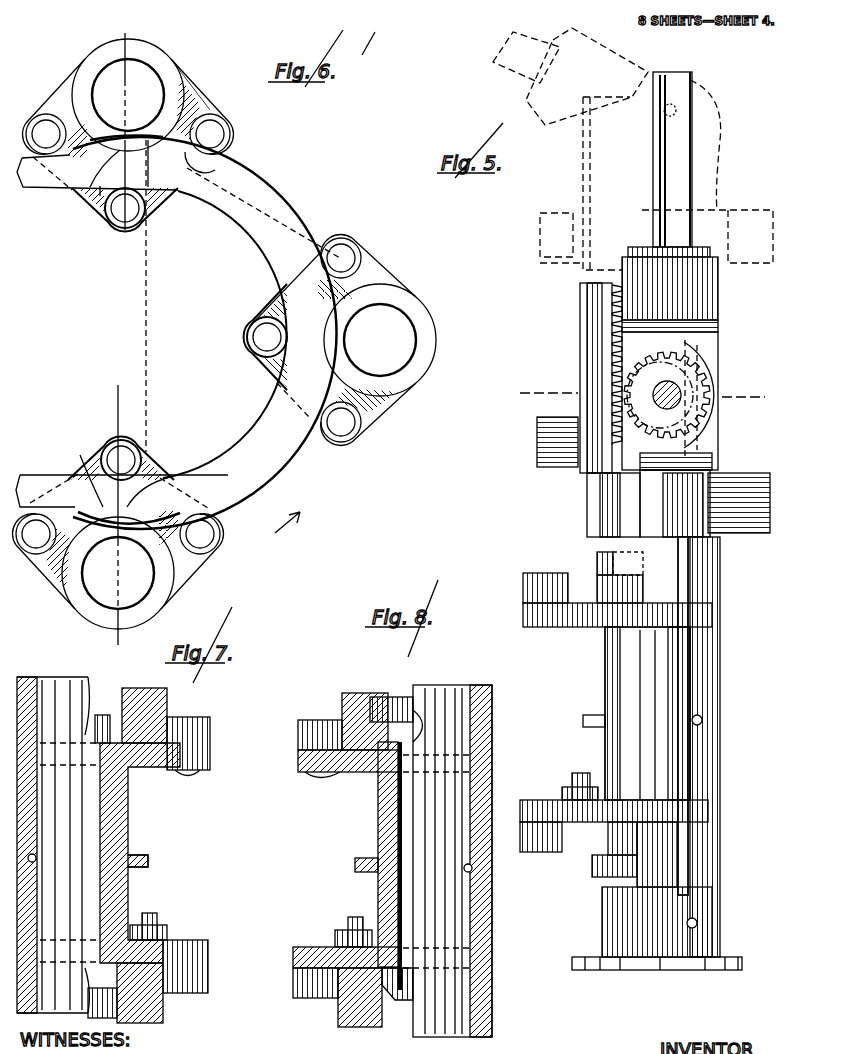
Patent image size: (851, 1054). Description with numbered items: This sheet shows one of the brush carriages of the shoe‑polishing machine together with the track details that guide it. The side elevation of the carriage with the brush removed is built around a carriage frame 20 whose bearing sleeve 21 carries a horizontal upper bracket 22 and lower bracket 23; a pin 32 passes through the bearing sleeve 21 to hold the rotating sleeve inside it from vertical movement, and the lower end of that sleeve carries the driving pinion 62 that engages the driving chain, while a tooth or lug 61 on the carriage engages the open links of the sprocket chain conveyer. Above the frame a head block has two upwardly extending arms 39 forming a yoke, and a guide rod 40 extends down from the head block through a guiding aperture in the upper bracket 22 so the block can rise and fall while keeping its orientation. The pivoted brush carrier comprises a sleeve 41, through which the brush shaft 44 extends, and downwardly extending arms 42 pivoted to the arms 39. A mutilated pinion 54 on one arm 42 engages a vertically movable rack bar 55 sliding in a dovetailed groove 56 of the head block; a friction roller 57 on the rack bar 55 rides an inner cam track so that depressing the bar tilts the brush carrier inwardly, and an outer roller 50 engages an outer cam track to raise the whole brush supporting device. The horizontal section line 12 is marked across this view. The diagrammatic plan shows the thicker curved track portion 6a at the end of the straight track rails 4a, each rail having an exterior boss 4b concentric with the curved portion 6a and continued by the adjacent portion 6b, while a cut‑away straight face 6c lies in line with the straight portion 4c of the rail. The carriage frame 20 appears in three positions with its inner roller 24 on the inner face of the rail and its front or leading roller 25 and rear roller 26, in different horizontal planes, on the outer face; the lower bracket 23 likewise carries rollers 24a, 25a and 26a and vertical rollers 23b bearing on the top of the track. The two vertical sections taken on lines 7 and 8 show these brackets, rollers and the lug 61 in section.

In FIG. 6, the track rail 4a is at (49, 190).
In FIG. 6, the exterior boss 4b is at (86, 200).
In FIG. 6, the straight portion of the rail 4c is at (98, 196).
In FIG. 6, the curved track portion 6a is at (291, 212).
In FIG. 6, the adjacent portion of the curved track 6b is at (188, 112).
In FIG. 6, the cut-away straight face 6c is at (208, 173).
In FIG. 6, the section line 7- 7 is at (118, 152).
In FIG. 6, the section line 8- 8 is at (115, 517).
In FIG. 5, the section line 12- 12 is at (637, 399).
In FIG. 7, the carriage frame 20 is at (140, 853).
In FIG. 8, the carriage frame 20 is at (378, 816).
In FIG. 6, the bearing sleeve 21 is at (82, 598).
In FIG. 5, the bearing sleeve 21 is at (705, 771).
In FIG. 7, the bearing sleeve 21 is at (58, 845).
In FIG. 8, the bearing sleeve 21 is at (492, 931).
In FIG. 5, the upper bracket 22 is at (575, 627).
In FIG. 8, the upper bracket 22 is at (300, 765).
In FIG. 8, the lower bracket 23 is at (322, 943).
In FIG. 5, the vertical rollers 23b is at (575, 781).
In FIG. 7, the vertical rollers 23b is at (152, 912).
In FIG. 8, the vertical rollers 23b is at (350, 918).
In FIG. 6, the inner roller 24 is at (140, 213).
In FIG. 5, the inner roller 24 is at (523, 589).
In FIG. 7, the inner roller 24 is at (203, 721).
In FIG. 8, the inner roller 24 is at (315, 720).
In FIG. 5, the inner roller of lower bracket 24a is at (541, 852).
In FIG. 7, the inner roller of lower bracket 24a is at (210, 976).
In FIG. 8, the inner roller of lower bracket 24a is at (312, 992).
In FIG. 6, the front or leading roller 25 is at (45, 121).
In FIG. 5, the front or leading roller 25 is at (600, 561).
In FIG. 8, the front or leading roller 25 is at (387, 697).
In FIG. 5, the leading roller of lower bracket 25a is at (600, 871).
In FIG. 7, the leading roller of lower bracket 25a is at (165, 1011).
In FIG. 8, the leading roller of lower bracket 25a is at (418, 716).
In FIG. 6, the rear roller 26 is at (228, 131).
In FIG. 5, the rear roller 26 is at (598, 581).
In FIG. 7, the rear roller 26 is at (104, 715).
In FIG. 8, the rear roller of lower bracket 26a is at (397, 1005).
In FIG. 5, the pin 32 is at (703, 721).
In FIG. 5, the arms of the head block 39 is at (703, 451).
In FIG. 5, the guide rod 40 is at (685, 691).
In FIG. 5, the sleeve of the brush carrier 41 is at (718, 306).
In FIG. 5, the arms of the brush carrier 42 is at (720, 333).
In FIG. 5, the brush shaft 44 is at (660, 172).
In FIG. 5, the outer roller 50 is at (750, 534).
In FIG. 5, the pinion 54 is at (710, 389).
In FIG. 5, the rack bar 55 is at (583, 302).
In FIG. 5, the dovetailed groove 56 is at (600, 495).
In FIG. 5, the friction roller 57 is at (540, 441).
In FIG. 5, the tooth or lug 61 is at (583, 721).
In FIG. 7, the tooth or lug 61 is at (150, 862).
In FIG. 8, the tooth or lug 61 is at (355, 869).
In FIG. 5, the driving pinion 62 is at (632, 972).